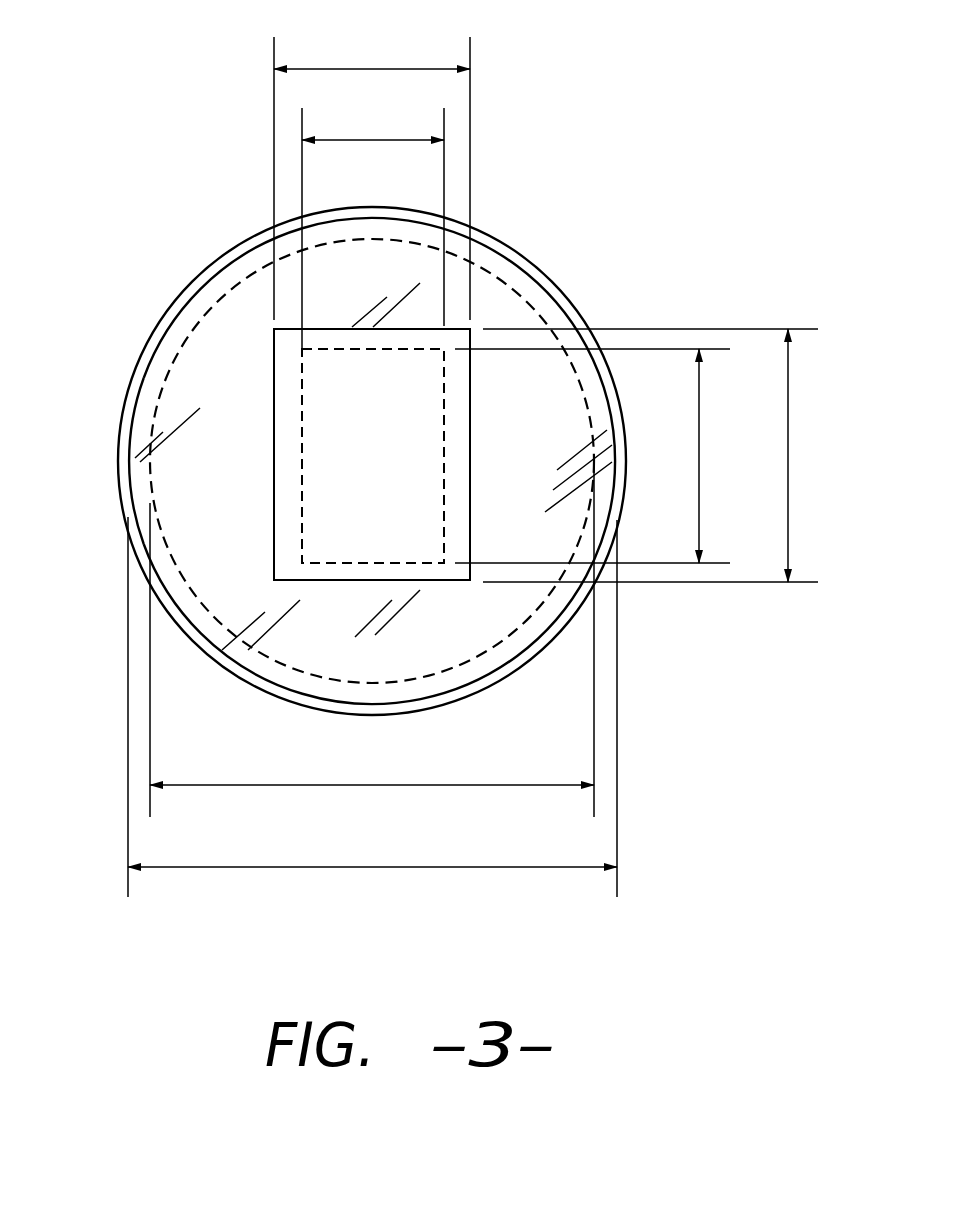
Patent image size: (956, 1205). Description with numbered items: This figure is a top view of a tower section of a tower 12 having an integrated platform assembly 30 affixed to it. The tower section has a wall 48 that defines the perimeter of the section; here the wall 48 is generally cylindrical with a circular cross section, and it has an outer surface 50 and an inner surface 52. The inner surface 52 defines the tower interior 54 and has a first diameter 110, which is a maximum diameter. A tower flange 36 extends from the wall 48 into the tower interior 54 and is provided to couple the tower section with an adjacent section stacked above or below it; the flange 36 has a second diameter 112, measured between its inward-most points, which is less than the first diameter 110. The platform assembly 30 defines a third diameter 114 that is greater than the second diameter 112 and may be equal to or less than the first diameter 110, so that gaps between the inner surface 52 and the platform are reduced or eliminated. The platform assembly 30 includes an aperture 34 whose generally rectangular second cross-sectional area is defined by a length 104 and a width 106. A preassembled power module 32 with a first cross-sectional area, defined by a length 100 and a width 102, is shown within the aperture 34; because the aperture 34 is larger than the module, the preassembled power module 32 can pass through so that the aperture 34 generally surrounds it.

The tower 12 is at (604, 134).
The platform assembly 30 is at (505, 310).
The preassembled power module 32 is at (444, 492).
The aperture 34 is at (292, 358).
The tower flange 36 is at (186, 597).
The wall 48 is at (146, 332).
The outer surface 50 is at (118, 420).
The inner surface 52 is at (127, 489).
The tower interior 54 is at (243, 472).
The length 100 is at (700, 479).
The width 102 is at (358, 139).
The length 104 is at (790, 489).
The width 106 is at (352, 66).
The first diameter 110 is at (482, 878).
The second diameter 112 is at (398, 792).
The third diameter 114 is at (372, 707).